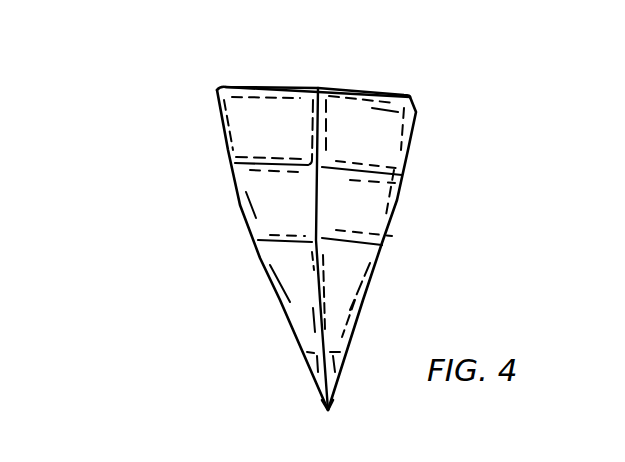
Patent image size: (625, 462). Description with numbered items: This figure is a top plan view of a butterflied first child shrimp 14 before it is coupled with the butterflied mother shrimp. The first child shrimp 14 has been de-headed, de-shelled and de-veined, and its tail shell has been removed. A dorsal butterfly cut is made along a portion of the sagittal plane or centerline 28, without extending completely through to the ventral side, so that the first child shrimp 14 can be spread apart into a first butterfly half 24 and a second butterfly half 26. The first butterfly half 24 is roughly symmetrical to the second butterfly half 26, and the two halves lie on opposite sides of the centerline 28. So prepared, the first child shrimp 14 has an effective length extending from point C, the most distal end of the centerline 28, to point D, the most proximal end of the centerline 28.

The first child shrimp 14 is at (183, 192).
The first butterfly half 24 is at (217, 92).
The second butterfly half 26 is at (412, 97).
The centerline 28 is at (318, 247).
The point C is at (323, 88).
The point D is at (328, 412).